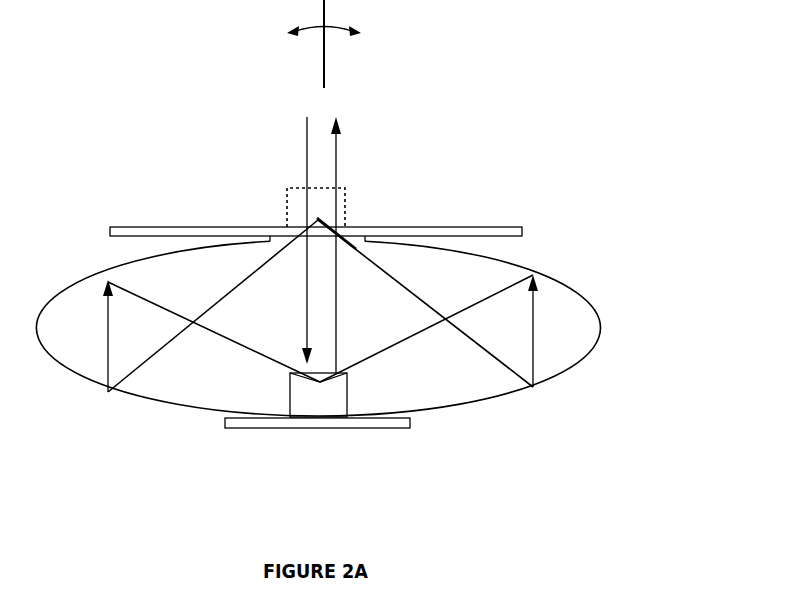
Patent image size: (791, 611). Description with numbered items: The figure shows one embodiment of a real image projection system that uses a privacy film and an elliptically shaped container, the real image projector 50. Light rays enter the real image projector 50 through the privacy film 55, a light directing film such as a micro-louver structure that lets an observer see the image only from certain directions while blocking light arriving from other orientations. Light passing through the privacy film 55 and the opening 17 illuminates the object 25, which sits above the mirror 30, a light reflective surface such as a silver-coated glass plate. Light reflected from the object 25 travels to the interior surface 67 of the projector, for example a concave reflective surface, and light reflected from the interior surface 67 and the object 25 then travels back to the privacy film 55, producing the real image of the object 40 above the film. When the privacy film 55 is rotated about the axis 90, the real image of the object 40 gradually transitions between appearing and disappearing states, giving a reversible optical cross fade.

The axis 90 is at (320, 35).
The privacy film 55 is at (142, 226).
The real image of the object 40 is at (345, 198).
The opening 17 is at (290, 244).
The interior surface 67 is at (535, 275).
The real image projector 50 is at (603, 330).
The object 25 is at (347, 393).
The mirror 30 is at (300, 430).